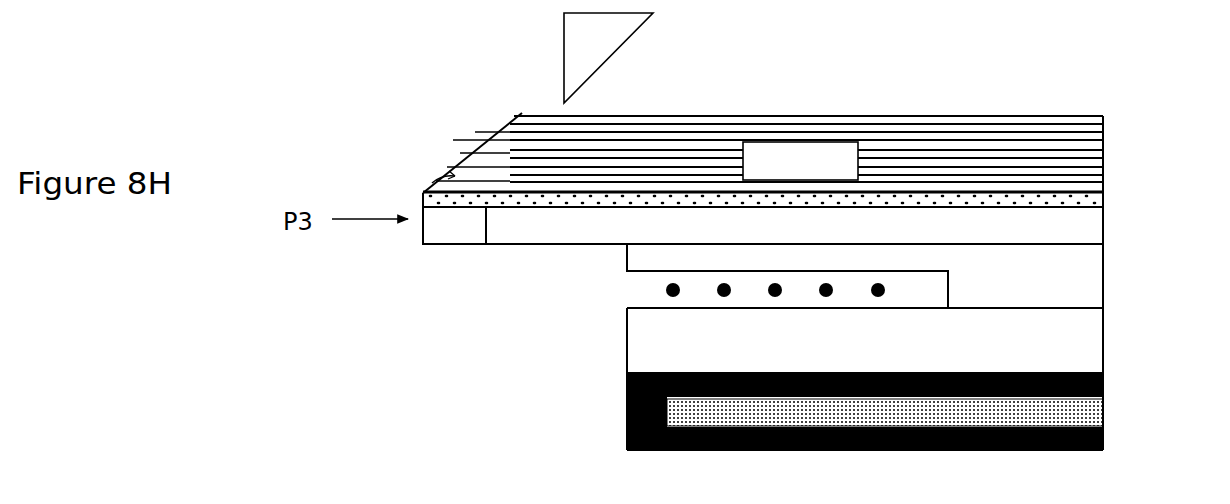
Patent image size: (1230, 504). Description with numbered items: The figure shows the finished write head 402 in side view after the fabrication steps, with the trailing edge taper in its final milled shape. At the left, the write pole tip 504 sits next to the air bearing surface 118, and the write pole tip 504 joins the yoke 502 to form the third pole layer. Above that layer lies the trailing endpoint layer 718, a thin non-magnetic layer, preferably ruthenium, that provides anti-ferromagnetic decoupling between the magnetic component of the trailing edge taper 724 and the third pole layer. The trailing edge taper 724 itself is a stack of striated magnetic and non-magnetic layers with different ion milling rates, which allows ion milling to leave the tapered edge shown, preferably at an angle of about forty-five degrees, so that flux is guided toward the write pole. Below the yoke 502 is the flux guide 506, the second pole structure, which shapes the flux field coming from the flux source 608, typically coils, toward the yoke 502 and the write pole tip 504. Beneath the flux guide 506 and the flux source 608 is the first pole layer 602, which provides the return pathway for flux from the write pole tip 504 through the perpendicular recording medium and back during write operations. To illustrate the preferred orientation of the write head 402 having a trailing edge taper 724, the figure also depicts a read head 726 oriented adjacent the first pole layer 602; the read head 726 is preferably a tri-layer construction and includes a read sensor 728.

The air bearing surface 118 is at (393, 203).
The write head 402 is at (270, 4).
The yoke 502 is at (1104, 221).
The write pole tip 504 is at (445, 244).
The flux guide 506 is at (1139, 345).
The P1 602 is at (627, 366).
The flux source 608 is at (652, 284).
The trailing endpoint layer 718 is at (1104, 196).
The trailing edge taper 724 is at (950, 118).
The read head 726 is at (1103, 374).
The read sensor 728 is at (627, 411).